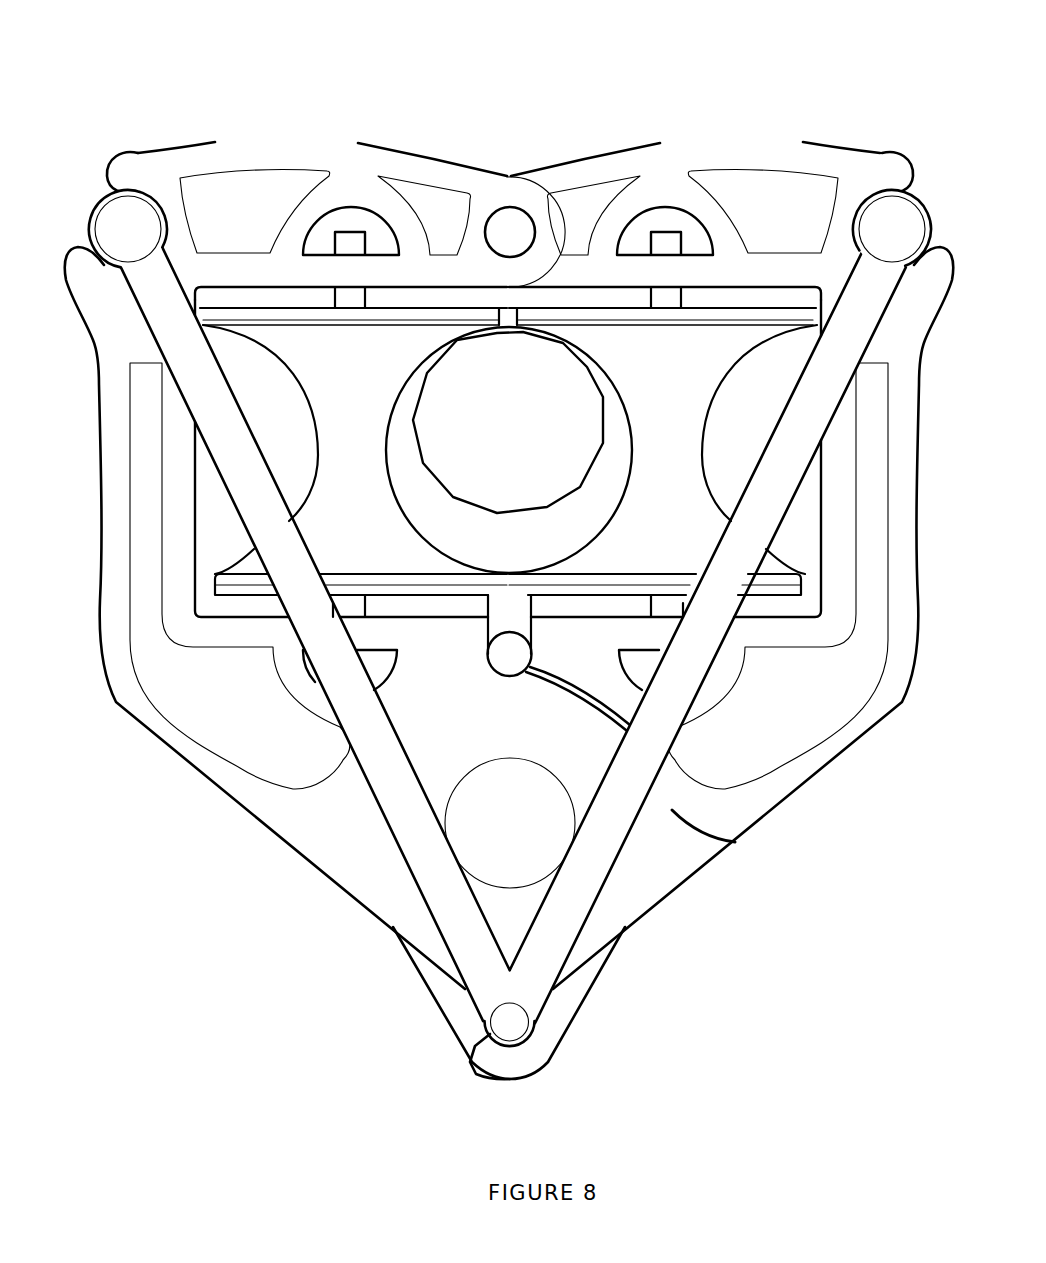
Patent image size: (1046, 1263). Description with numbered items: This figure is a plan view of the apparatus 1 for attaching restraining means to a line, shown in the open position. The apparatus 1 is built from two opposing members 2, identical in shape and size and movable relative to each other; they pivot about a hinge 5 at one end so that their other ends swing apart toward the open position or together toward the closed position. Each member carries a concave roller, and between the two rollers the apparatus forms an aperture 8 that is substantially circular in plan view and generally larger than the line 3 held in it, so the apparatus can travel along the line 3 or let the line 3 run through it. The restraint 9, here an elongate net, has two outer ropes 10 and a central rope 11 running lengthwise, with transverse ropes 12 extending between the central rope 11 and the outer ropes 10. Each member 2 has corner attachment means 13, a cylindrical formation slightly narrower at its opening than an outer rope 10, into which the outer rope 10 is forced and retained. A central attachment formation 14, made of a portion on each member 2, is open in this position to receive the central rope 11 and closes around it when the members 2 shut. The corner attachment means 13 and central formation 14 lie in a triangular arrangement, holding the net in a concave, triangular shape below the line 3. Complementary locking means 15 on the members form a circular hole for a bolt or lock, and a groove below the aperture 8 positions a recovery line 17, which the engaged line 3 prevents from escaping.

The apparatus for attaching restraining means to a line 1 is at (797, 63).
The opposing members 2 is at (338, 838).
The line 3 is at (517, 433).
The hinge 5 is at (518, 835).
The aperture 8 is at (542, 553).
The restraint 9 is at (533, 950).
The outer ropes 10 is at (110, 227).
The central rope 11 is at (520, 1033).
The transverse ropes 12 is at (323, 680).
The corner attachment means 13 is at (125, 170).
The central attachment formation 14 is at (482, 1038).
The locking means 15 is at (503, 188).
The recovery line 17 is at (525, 668).